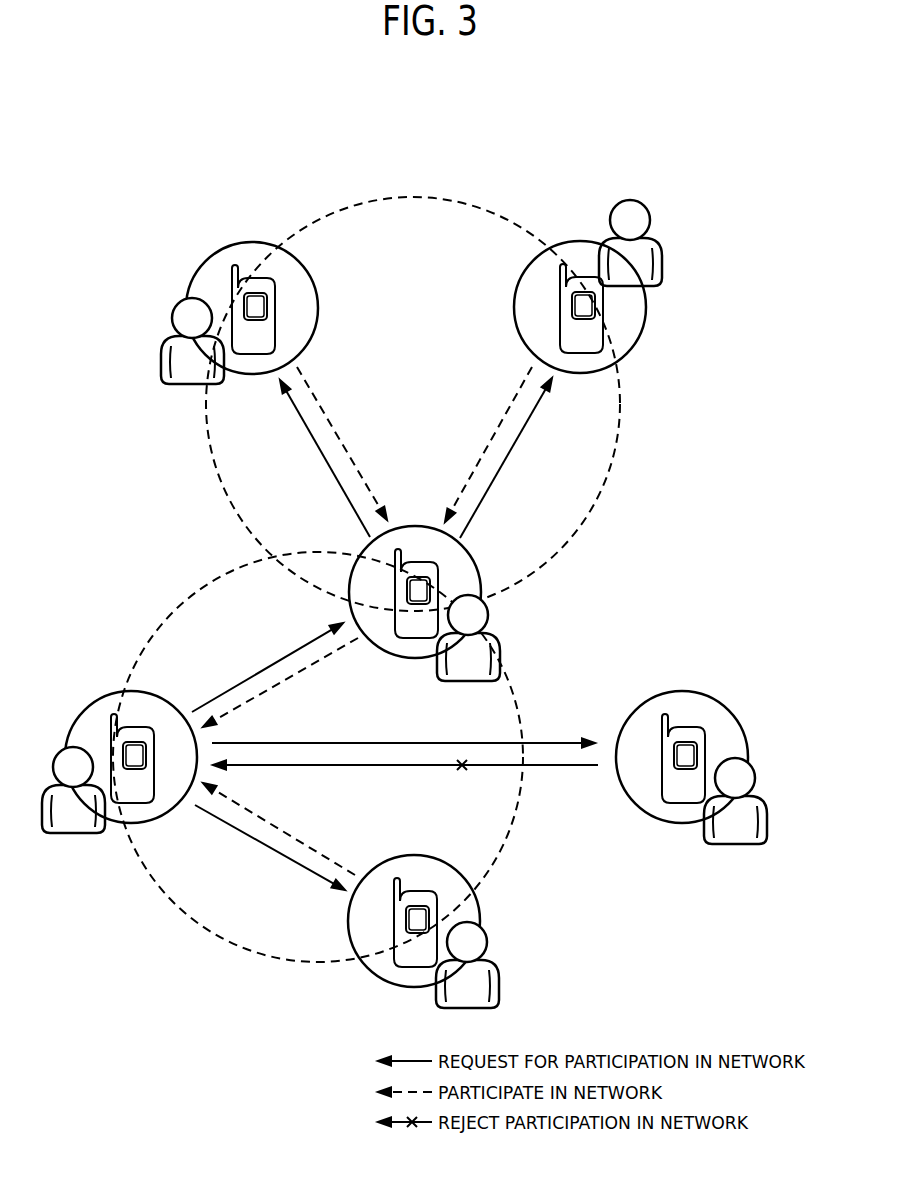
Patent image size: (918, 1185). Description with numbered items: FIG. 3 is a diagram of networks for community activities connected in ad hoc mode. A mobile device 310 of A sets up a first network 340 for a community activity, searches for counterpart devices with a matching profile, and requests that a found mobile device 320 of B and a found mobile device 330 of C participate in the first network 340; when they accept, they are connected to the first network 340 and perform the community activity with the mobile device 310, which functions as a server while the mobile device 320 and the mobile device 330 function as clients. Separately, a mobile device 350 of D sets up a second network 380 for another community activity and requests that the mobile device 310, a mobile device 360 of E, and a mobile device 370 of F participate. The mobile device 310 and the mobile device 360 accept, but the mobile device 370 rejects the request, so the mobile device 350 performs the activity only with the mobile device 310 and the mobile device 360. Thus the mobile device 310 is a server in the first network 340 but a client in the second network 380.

The mobile device of A 310 is at (443, 582).
The mobile device of B 320 is at (232, 273).
The mobile device of C 330 is at (575, 280).
The first network 340 is at (618, 435).
The mobile device of D 350 is at (112, 720).
The mobile device of E 360 is at (405, 960).
The mobile device of F 370 is at (688, 727).
The second network 380 is at (508, 838).